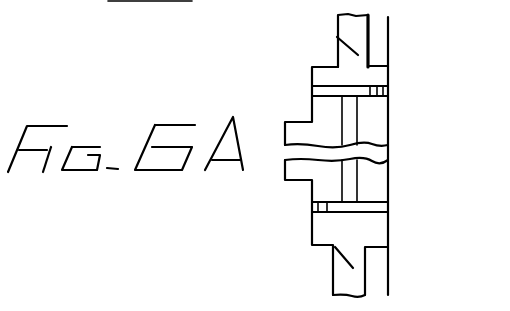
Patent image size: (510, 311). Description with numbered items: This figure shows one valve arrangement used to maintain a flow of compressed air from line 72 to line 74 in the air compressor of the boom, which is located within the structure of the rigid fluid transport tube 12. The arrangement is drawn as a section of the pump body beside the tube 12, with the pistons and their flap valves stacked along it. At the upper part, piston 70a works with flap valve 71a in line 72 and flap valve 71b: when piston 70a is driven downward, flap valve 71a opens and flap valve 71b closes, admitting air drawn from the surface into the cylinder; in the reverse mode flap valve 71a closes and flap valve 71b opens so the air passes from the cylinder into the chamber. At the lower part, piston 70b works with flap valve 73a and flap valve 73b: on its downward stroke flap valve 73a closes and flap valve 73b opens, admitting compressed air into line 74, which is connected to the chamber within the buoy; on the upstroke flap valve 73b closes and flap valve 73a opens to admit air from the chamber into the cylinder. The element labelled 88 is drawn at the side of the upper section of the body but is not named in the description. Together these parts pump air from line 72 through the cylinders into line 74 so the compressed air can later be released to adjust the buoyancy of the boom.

The rigid fluid transport tube 12 is at (388, 55).
The line 72 is at (371, 20).
The flap valve 71a is at (351, 50).
The flange 88 is at (311, 98).
The flap valve 71b is at (365, 98).
The piston 70a is at (384, 91).
The piston 70b is at (381, 210).
The flap valve 73a is at (326, 214).
The flap valve 73b is at (342, 262).
The line 74 is at (366, 282).